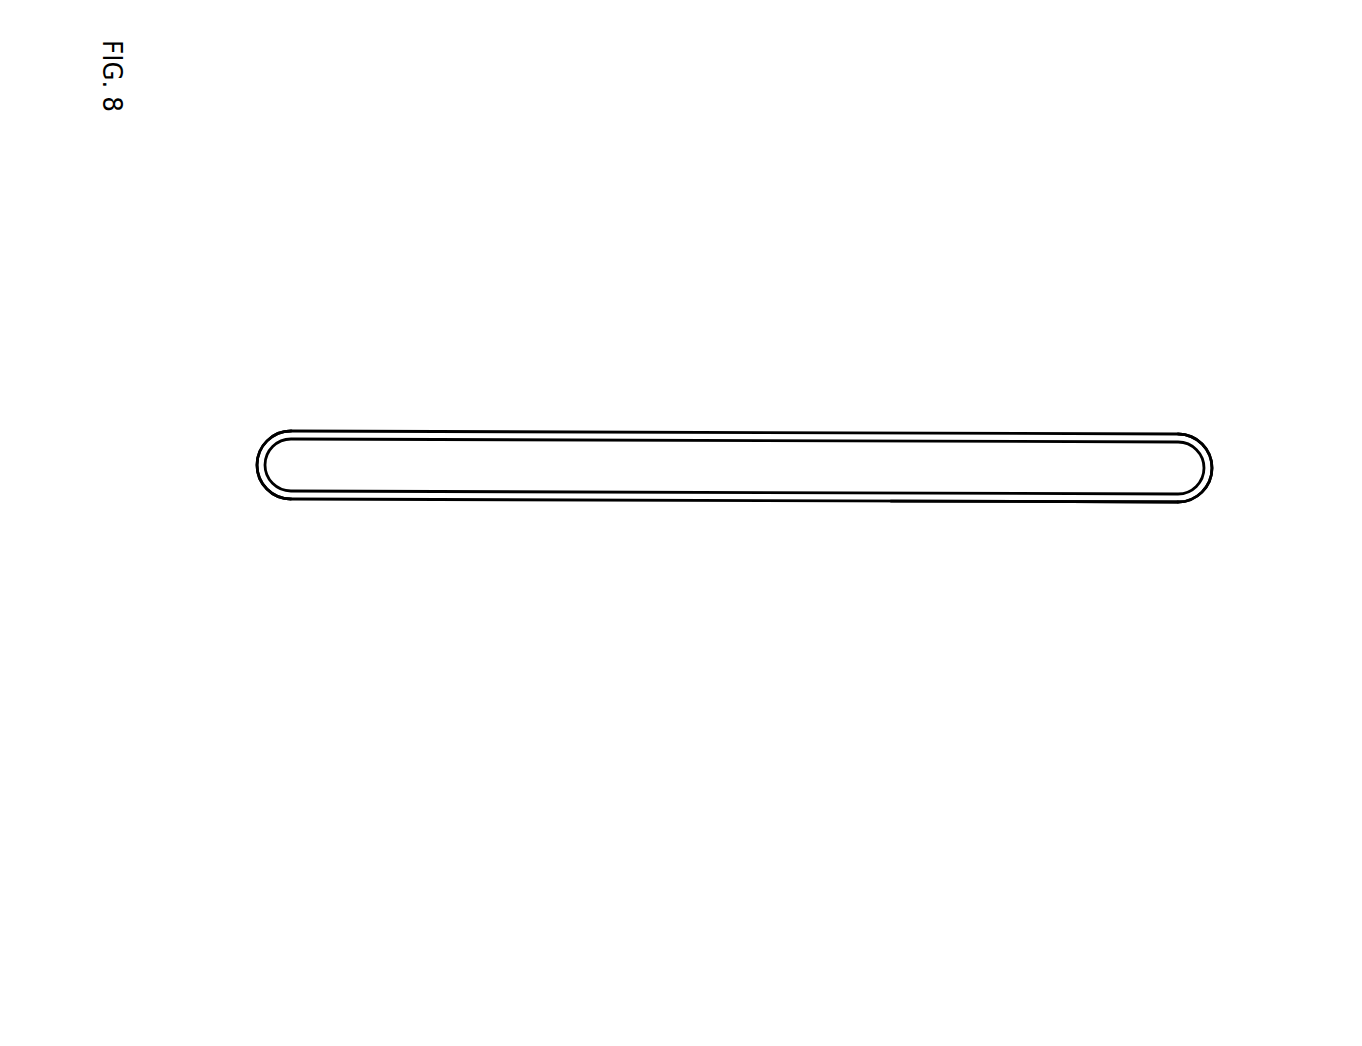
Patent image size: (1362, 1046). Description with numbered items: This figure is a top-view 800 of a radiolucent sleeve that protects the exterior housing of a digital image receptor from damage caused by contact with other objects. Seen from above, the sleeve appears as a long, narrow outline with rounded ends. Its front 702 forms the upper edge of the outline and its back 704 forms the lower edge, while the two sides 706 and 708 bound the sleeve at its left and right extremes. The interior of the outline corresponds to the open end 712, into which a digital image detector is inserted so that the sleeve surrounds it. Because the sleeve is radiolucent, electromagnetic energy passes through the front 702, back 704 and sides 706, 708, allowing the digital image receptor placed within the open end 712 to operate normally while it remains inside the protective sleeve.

The top-view 800 is at (112, 888).
The front 702 is at (566, 431).
The open end 712 is at (437, 475).
The back 704 is at (919, 502).
The side 706 is at (257, 466).
The side 708 is at (1213, 468).